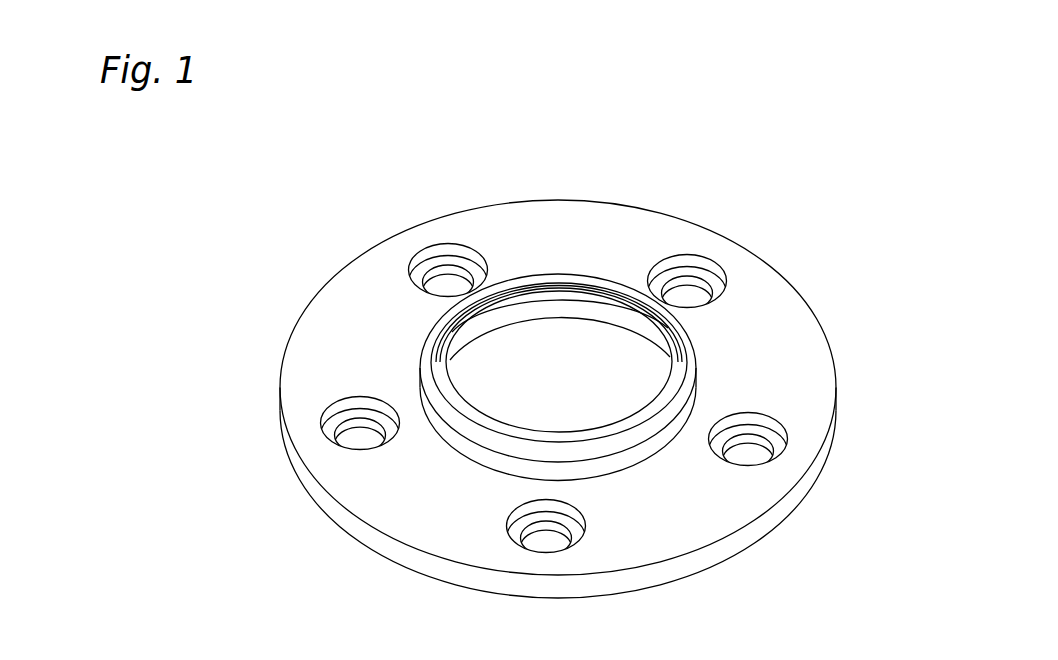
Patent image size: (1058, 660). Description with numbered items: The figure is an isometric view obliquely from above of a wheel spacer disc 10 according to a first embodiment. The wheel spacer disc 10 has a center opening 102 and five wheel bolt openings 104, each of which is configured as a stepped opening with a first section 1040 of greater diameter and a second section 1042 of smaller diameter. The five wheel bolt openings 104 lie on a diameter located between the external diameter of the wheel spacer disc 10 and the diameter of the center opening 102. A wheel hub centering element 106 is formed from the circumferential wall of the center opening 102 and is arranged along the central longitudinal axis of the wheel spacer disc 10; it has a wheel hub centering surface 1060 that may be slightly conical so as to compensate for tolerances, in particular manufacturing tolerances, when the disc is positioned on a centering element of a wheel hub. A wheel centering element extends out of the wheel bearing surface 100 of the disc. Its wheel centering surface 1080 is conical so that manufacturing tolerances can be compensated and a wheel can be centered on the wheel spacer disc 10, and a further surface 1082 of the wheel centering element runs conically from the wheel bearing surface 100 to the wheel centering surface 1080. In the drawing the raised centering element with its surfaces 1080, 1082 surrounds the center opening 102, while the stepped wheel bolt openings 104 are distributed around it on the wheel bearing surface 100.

The wheel spacer disc 10 is at (816, 187).
The wheel bearing surface 100 is at (357, 320).
The center opening 102 is at (592, 330).
The wheel bolt openings 104 is at (749, 441).
The wheel hub centering element 106 is at (617, 355).
The first section 1040 is at (452, 247).
The second section 1042 is at (355, 420).
The wheel hub centering surface 1060 is at (543, 303).
The wheel centering surface 1080 is at (640, 427).
The surface 1082 is at (465, 440).